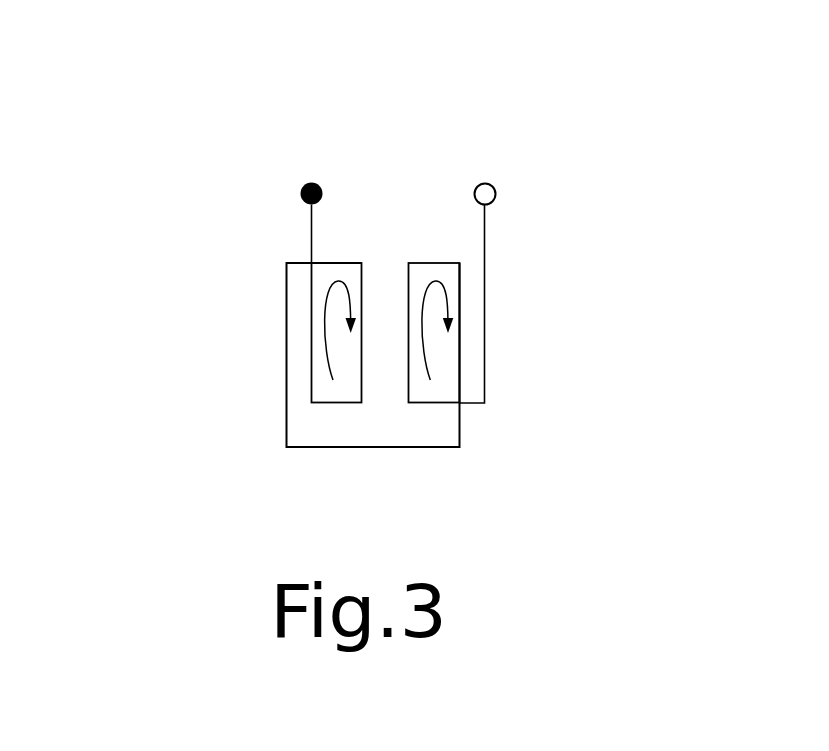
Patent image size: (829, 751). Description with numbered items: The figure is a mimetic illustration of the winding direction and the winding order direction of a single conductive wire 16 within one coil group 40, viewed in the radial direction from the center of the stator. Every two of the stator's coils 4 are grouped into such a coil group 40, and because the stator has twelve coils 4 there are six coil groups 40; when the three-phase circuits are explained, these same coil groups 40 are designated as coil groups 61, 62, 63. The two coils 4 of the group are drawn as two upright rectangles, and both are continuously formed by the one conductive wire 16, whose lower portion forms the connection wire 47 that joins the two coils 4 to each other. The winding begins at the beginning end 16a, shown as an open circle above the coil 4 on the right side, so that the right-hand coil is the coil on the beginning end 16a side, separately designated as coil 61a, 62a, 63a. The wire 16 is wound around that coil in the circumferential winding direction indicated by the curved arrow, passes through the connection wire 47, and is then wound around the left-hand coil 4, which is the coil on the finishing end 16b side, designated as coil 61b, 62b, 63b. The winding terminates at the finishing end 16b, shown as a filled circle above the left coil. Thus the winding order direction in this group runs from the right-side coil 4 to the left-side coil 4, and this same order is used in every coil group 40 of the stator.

The coil group 40 is at (384, 272).
The coil group 61 is at (384, 272).
The coil group 62 is at (384, 272).
The coil group 63 is at (384, 272).
The connection wire 47 is at (376, 448).
The coil 4 is at (384, 325).
The coil 61b is at (195, 325).
The coil 62b is at (195, 325).
The coil 63b is at (224, 378).
The coil 61a is at (575, 328).
The coil 62a is at (575, 328).
The coil 63a is at (514, 360).
The conductive wire 16 is at (400, 256).
The beginning end 16a is at (492, 185).
The finishing end 16b is at (303, 185).